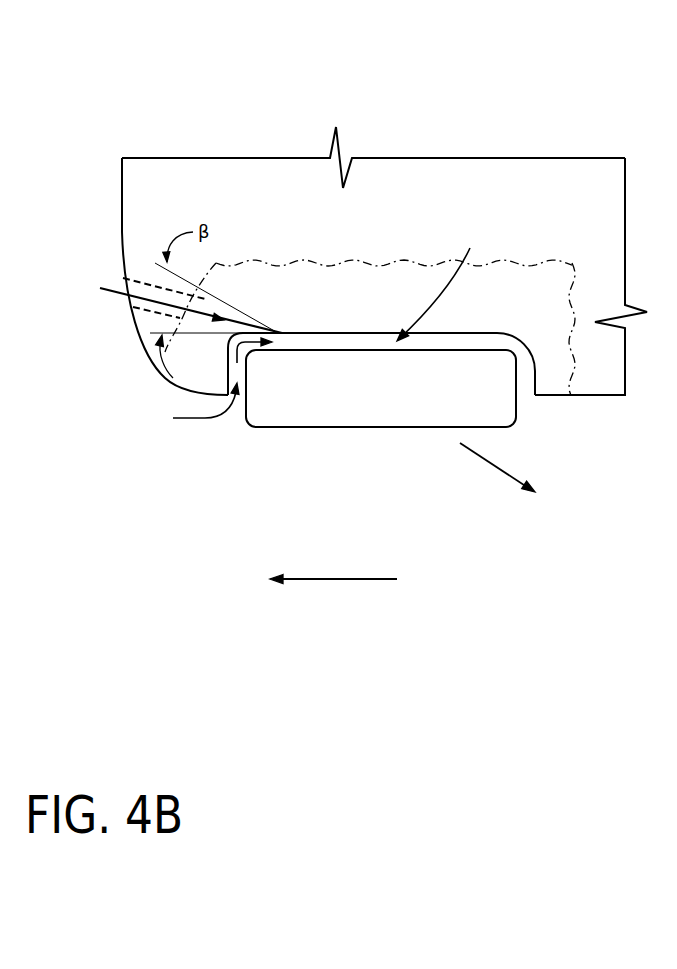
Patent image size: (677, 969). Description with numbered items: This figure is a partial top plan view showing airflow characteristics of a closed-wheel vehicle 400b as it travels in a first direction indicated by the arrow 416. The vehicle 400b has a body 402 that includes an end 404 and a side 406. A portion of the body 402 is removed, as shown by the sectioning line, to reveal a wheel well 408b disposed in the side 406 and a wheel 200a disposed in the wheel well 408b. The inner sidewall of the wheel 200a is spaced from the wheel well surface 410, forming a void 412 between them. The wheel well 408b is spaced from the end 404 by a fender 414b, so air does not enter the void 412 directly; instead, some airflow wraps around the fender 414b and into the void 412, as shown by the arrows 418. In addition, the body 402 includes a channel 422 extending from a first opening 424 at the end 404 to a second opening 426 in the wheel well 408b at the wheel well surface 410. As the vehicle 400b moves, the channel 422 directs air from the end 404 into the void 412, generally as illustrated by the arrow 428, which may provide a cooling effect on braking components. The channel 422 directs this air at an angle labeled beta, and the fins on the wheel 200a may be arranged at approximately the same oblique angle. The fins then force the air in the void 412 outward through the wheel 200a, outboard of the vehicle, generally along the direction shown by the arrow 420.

The vehicle 400b is at (514, 102).
The body 402 is at (373, 167).
The end 404 is at (122, 208).
The side 406 is at (605, 395).
The wheel well 408b is at (498, 332).
The wheel well surface 410 is at (305, 332).
The void 412 is at (452, 286).
The fender 414b is at (173, 388).
The arrow 416 is at (333, 568).
The arrows 418 is at (208, 418).
The arrow 420 is at (493, 467).
The channel 422 is at (249, 321).
The first opening 424 is at (128, 280).
The second opening 426 is at (247, 333).
The arrow 428 is at (113, 292).
The wheel 200a is at (287, 427).